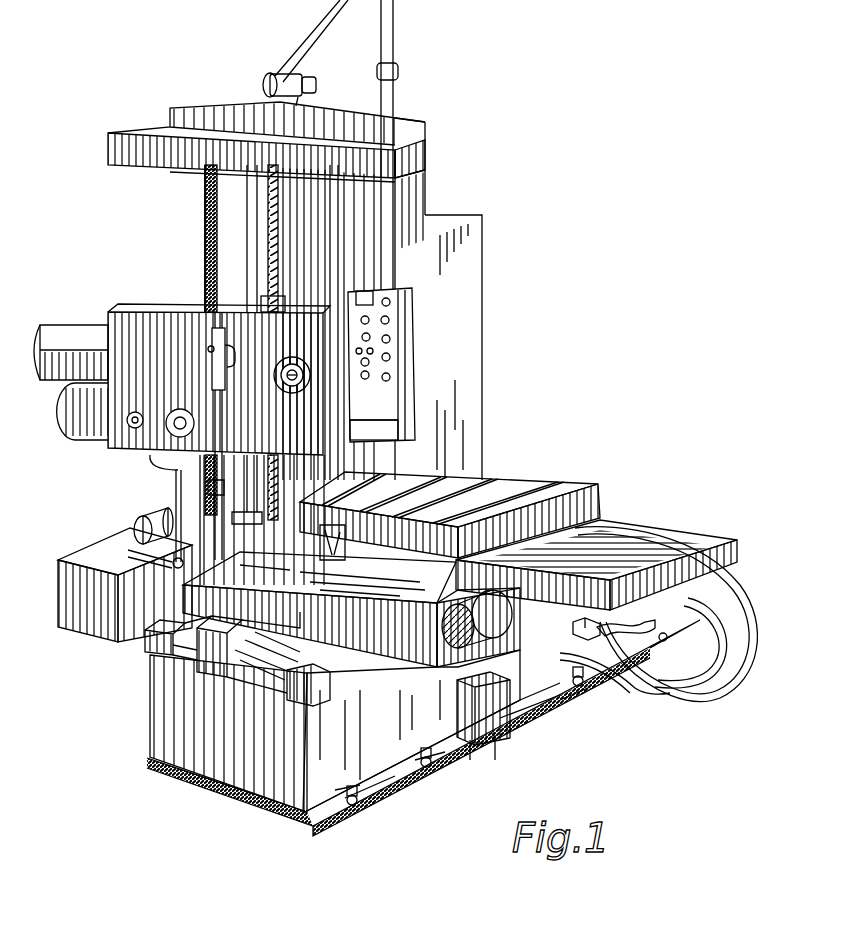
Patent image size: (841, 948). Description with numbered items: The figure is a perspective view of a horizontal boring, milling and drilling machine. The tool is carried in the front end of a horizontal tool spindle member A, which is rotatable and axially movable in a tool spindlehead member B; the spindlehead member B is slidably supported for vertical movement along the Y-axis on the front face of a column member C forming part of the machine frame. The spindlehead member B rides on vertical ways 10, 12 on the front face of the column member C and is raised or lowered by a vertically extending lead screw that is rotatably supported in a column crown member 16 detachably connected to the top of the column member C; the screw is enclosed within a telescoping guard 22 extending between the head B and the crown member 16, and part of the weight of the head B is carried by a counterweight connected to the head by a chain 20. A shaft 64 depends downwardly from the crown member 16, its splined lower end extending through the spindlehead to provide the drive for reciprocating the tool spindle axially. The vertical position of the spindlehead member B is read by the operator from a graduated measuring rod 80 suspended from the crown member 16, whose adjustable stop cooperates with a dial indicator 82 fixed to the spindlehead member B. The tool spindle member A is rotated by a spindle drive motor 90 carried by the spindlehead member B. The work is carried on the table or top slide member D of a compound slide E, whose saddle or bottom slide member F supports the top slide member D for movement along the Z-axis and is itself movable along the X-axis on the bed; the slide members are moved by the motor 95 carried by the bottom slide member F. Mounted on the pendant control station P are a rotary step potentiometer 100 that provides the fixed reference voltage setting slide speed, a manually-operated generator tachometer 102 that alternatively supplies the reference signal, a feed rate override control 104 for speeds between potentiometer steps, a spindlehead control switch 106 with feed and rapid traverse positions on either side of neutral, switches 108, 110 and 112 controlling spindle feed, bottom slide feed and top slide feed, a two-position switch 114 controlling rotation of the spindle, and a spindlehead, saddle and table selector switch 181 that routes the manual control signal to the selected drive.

The vertical way 10 is at (205, 193).
The vertical way 12 is at (288, 200).
The column crown member 16 is at (112, 160).
The chain 20 is at (213, 220).
The telescoping guard 22 is at (288, 303).
The shaft 64 is at (250, 246).
The graduated measuring rod 80 is at (205, 472).
The dial indicator 82 is at (208, 349).
The spindle drive motor 90 is at (78, 442).
The motor 95 is at (457, 650).
The rotary step potentiometer 100 is at (369, 318).
The manually-operated generator tachometer 102 is at (366, 380).
The feed rate override control 104 is at (370, 336).
The spindlehead control switch 106 is at (390, 357).
The switch 108 is at (389, 319).
The switch 110 is at (390, 339).
The switch 112 is at (390, 378).
The two-position switch 114 is at (390, 300).
The spindlehead, saddle and table selector switch 181 is at (369, 362).
The tool spindle member A is at (296, 390).
The tool spindlehead member B is at (123, 308).
The column member C is at (432, 200).
The table or top slide member D is at (528, 477).
The compound slide E is at (610, 512).
The saddle or bottom slide member F is at (397, 656).
The pendant control station P is at (412, 422).